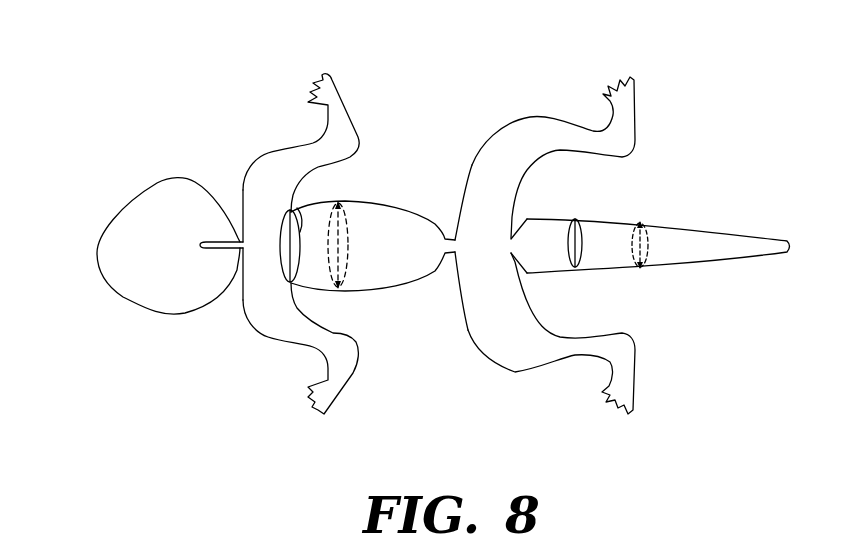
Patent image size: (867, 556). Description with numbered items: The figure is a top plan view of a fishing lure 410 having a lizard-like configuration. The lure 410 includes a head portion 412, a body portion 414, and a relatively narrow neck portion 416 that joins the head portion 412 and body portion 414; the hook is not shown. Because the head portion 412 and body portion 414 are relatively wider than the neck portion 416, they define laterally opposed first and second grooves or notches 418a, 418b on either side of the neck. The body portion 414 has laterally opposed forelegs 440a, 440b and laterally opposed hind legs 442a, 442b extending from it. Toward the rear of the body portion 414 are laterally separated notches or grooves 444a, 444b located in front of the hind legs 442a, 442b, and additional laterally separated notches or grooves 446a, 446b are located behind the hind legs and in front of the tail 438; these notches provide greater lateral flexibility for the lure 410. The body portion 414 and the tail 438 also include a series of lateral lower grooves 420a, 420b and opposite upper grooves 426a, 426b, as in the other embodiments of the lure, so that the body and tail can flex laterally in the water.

The fishing lure 410 is at (106, 63).
The head portion 412 is at (128, 286).
The body portion 414 is at (414, 211).
The neck portion 416 is at (208, 246).
The first groove or notch 418a is at (228, 310).
The second groove or notch 418b is at (228, 183).
The lateral lower groove 420a is at (347, 263).
The lateral lower groove 420b is at (655, 262).
The upper groove 426a is at (310, 208).
The upper groove 426b is at (585, 240).
The tail 438 is at (747, 257).
The foreleg 440a is at (292, 344).
The foreleg 440b is at (292, 147).
The hind leg 442a is at (528, 372).
The hind leg 442b is at (528, 118).
The notch or groove 444a is at (449, 255).
The notch or groove 444b is at (449, 237).
The notch or groove 446a is at (520, 273).
The notch or groove 446b is at (520, 217).